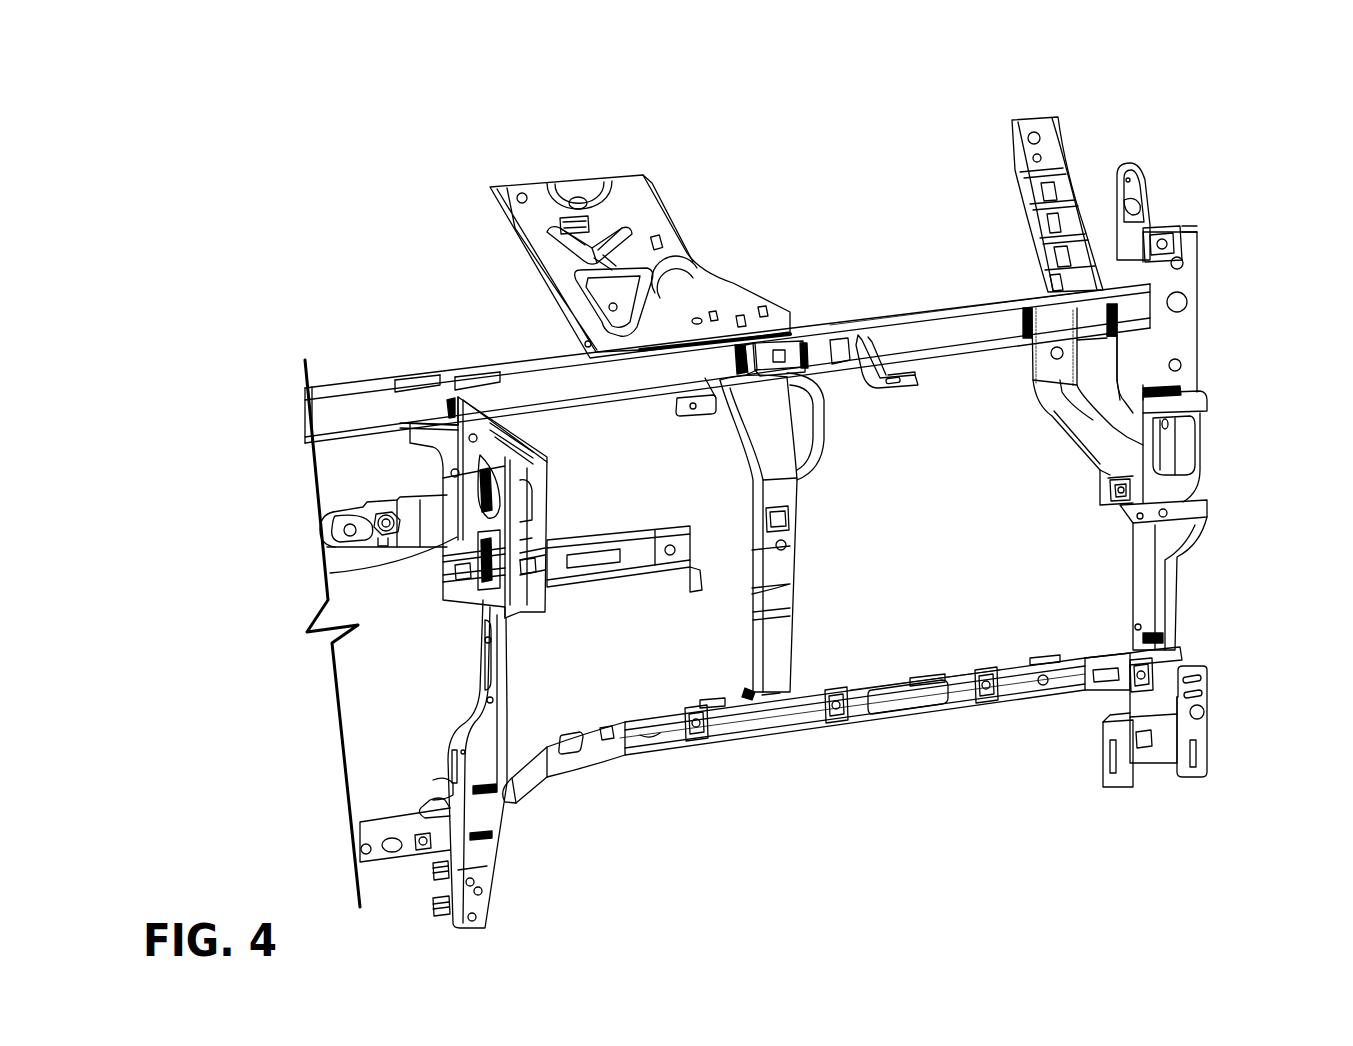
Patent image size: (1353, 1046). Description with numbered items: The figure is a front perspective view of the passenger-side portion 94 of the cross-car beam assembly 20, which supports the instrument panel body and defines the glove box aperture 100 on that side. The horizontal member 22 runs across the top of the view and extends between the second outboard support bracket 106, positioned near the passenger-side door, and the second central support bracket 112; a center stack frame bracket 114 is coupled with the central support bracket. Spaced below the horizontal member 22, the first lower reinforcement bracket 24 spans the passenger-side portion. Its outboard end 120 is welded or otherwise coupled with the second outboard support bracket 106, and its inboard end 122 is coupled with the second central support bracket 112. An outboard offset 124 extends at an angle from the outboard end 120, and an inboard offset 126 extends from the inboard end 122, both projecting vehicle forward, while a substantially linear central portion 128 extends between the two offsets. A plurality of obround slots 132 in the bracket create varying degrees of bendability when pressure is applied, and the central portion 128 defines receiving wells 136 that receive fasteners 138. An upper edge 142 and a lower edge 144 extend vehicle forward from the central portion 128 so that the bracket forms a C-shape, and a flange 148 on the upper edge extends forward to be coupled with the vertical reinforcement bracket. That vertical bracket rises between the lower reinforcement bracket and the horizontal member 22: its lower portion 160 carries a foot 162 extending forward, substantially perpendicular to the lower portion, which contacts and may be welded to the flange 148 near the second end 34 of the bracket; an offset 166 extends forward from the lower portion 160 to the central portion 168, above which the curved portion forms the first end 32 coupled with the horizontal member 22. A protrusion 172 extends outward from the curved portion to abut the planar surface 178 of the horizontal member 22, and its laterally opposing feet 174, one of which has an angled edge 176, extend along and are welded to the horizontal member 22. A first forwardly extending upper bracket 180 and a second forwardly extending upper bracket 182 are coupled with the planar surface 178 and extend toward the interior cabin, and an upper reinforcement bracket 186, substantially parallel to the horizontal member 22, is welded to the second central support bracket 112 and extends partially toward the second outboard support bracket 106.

The cross-car beam assembly 20 is at (1222, 143).
The horizontal member 22 is at (940, 318).
The first lower reinforcement bracket 24 is at (1022, 660).
The first end 32 is at (862, 372).
The second end 34 is at (778, 700).
The passenger-side portion 94 is at (1055, 103).
The glove box aperture 100 is at (1043, 526).
The second outboard support bracket 106 is at (1185, 380).
The second central support bracket 112 is at (493, 680).
The center stack frame bracket 114 is at (455, 537).
The outboard end 120 is at (1158, 678).
The inboard end 122 is at (483, 820).
The outboard offset 124 is at (1072, 668).
The inboard offset 126 is at (548, 778).
The central portion 128 is at (852, 781).
The slots 132 is at (1097, 702).
The receiving wells 136 is at (1156, 670).
The fasteners 138 is at (1143, 690).
The upper edge 142 is at (892, 678).
The lower edge 144 is at (900, 713).
The flange 148 is at (748, 694).
The lower portion 160 is at (776, 635).
The foot 162 is at (793, 677).
The offset 166 is at (778, 600).
The central portion 168 is at (778, 572).
The protrusion 172 is at (773, 353).
The laterally opposing feet 174 is at (757, 340).
The angled edge 176 is at (748, 348).
The planar surface 178 is at (980, 330).
The first forwardly extending upper bracket 180 is at (705, 363).
The second forwardly extending upper bracket 182 is at (1073, 400).
The upper reinforcement bracket 186 is at (638, 548).